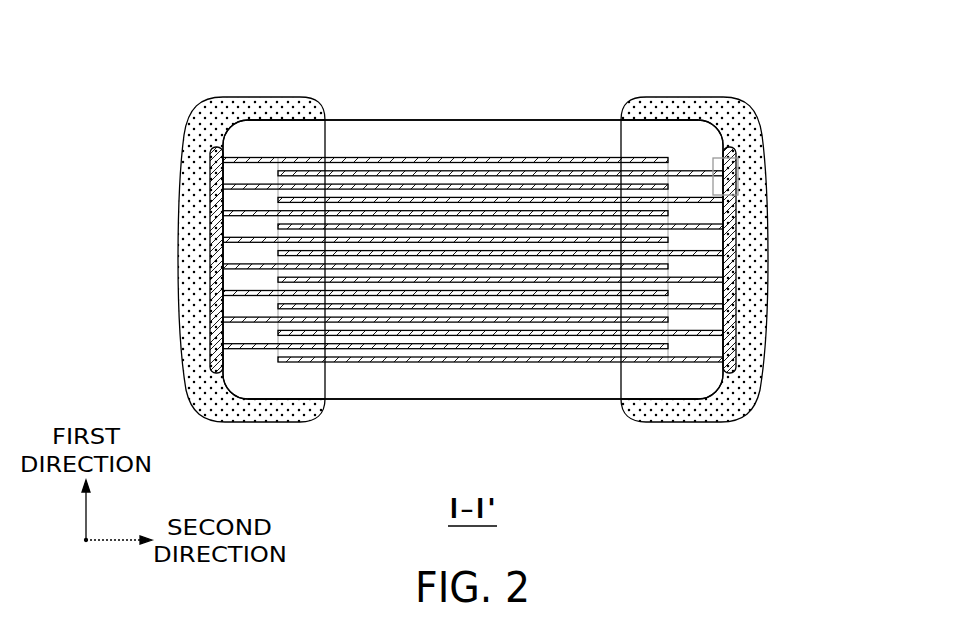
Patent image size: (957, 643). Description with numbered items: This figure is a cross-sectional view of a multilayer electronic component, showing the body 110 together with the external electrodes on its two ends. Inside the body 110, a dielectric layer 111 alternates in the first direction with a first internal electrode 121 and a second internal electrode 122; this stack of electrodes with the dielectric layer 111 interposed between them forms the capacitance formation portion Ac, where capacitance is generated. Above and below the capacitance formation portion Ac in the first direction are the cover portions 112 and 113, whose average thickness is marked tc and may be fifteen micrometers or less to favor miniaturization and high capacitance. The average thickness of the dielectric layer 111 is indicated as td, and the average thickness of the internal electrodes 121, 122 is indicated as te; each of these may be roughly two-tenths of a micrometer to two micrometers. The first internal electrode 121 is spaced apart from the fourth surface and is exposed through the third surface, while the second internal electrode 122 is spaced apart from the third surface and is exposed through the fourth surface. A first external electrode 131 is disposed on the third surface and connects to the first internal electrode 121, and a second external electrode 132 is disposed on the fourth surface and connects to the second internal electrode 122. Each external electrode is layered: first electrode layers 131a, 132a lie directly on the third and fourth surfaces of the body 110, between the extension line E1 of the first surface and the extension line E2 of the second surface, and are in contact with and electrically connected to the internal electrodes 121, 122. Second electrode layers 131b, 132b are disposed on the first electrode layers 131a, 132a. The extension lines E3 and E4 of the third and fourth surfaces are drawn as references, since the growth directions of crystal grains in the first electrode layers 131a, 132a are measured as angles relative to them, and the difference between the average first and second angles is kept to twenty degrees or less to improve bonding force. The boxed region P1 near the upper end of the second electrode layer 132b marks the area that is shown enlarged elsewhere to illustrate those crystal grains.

The body 110 is at (417, 118).
The dielectric layer 111 is at (353, 170).
The cover portion 112 is at (473, 128).
The cover portion 113 is at (481, 388).
The first internal electrode 121 is at (521, 157).
The second internal electrode 122 is at (595, 171).
The first external electrode 131 is at (186, 259).
The first electrode layer 131a is at (217, 228).
The second electrode layer 131b is at (192, 262).
The second external electrode 132 is at (761, 259).
The first electrode layer 132a is at (740, 225).
The second electrode layer 132b is at (752, 262).
The capacitance formation portion Ac is at (473, 251).
The P1 region P1 is at (742, 188).
The extension line of the first surface E1 is at (240, 399).
The extension line of the second surface E2 is at (245, 120).
The extension line of the third surface E3 is at (223, 372).
The extension line of the fourth surface E4 is at (723, 372).
The average thickness of the cover portions tc is at (660, 120).
The average thickness of the dielectric layer td is at (668, 333).
The average thickness of the internal electrodes te is at (668, 348).